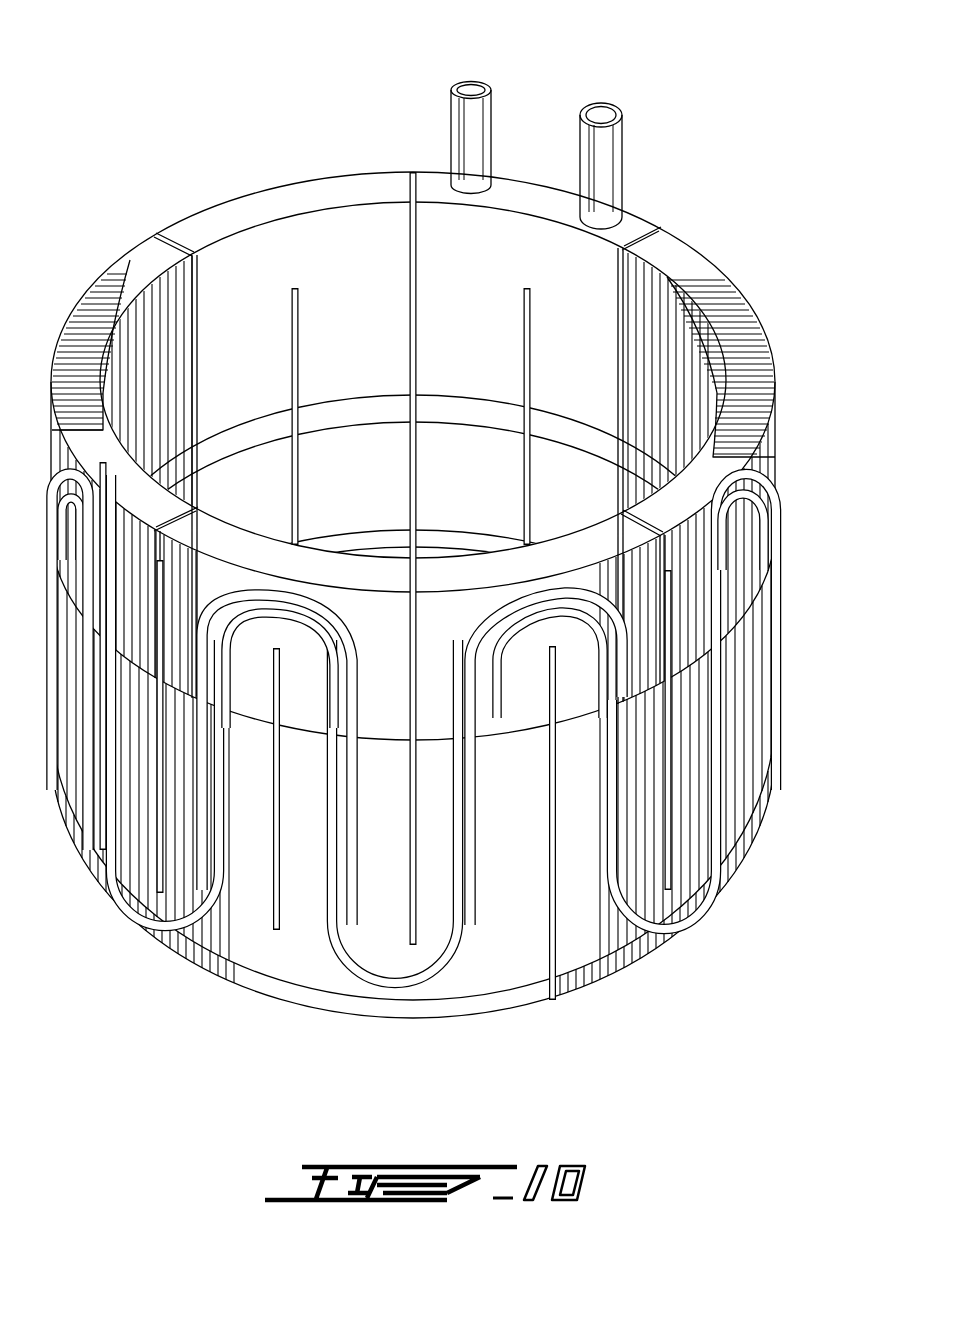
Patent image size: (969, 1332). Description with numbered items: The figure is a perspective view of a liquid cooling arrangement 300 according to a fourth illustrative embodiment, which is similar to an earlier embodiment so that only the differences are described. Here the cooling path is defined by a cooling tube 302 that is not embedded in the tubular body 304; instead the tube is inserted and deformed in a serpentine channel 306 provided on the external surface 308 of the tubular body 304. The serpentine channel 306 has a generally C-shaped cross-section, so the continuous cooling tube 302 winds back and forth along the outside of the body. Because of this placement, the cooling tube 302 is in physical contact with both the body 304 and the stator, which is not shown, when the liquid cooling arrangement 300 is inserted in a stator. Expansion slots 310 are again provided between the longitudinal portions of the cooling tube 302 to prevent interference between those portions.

The liquid cooling arrangement 300 is at (128, 128).
The cooling tube 302 is at (212, 913).
The tubular body 304 is at (265, 200).
The serpentine channel 306 is at (604, 615).
The external surface 308 is at (520, 922).
The expansion slots 310 is at (407, 190).